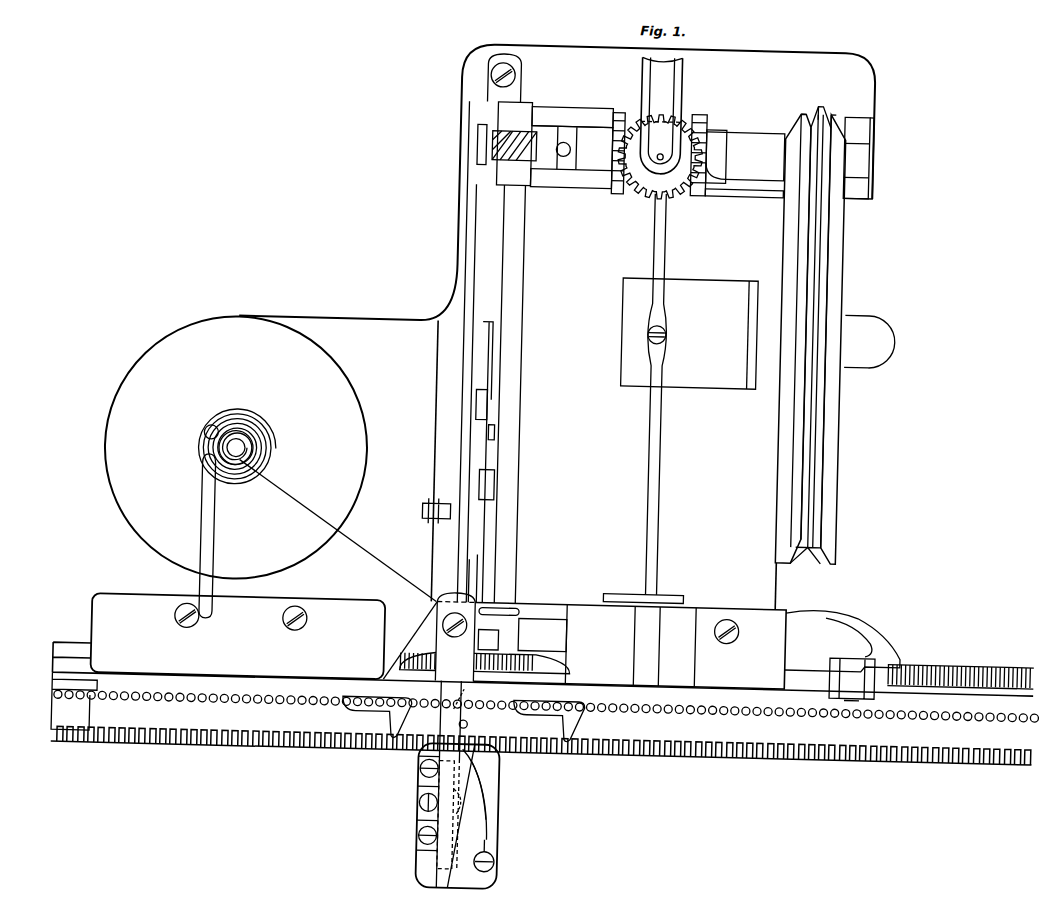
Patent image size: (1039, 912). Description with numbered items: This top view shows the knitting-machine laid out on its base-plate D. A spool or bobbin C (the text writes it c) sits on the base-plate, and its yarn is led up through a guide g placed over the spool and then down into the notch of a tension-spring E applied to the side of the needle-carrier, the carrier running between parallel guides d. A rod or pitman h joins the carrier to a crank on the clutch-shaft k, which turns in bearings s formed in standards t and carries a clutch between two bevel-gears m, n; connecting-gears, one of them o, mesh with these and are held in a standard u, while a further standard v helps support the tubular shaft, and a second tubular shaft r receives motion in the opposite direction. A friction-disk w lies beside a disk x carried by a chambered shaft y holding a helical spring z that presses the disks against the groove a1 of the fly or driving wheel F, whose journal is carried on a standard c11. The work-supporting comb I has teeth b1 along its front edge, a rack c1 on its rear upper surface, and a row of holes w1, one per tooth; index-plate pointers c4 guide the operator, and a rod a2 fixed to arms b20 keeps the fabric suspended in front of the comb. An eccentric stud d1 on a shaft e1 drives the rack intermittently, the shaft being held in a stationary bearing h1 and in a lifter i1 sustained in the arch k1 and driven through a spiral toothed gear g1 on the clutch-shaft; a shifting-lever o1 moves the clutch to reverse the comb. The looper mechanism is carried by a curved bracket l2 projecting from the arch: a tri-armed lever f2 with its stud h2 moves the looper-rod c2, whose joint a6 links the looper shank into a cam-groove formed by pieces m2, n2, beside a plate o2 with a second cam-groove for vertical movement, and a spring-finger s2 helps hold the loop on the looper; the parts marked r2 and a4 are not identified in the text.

The base-plate D is at (566, 326).
The spool or bobbin C is at (236, 447).
The joint a6 is at (245, 446).
The spool or bobbin c is at (236, 447).
The guide g is at (211, 436).
The arch k1 is at (507, 376).
The clutch-shaft k is at (483, 144).
The helical spring z is at (571, 148).
The tubular shaft r is at (575, 149).
The bevel-gear n is at (612, 153).
The bevel-gear m is at (706, 156).
The standard u is at (669, 373).
The connecting-gear o is at (663, 170).
The standard v is at (716, 156).
The tubular and chambered shaft y is at (745, 165).
The bearings s is at (856, 158).
The standards t is at (862, 158).
The fly or driving wheel F is at (810, 339).
The groove a1 is at (811, 331).
The rod a2 is at (821, 108).
The disk x is at (801, 109).
The friction-disk w is at (835, 110).
The rod or pitman h is at (465, 352).
The shaft e1 is at (509, 394).
The parallel guides d is at (484, 461).
The tri-armed lever f2 is at (460, 496).
The looper-rod c2 is at (478, 578).
The tension-spring E is at (452, 725).
The shifting-lever o1 is at (648, 398).
The standard c11 is at (690, 333).
The arms b20 is at (542, 697).
The shaft-lifter i1 is at (499, 621).
The pin or stud d1 is at (534, 635).
The rack c1 is at (717, 670).
The stationary bearing h1 is at (852, 679).
The row of holes w1 is at (546, 699).
The pointer c4 is at (463, 719).
The comb I is at (542, 735).
The teeth b1 is at (543, 758).
The pin r2 is at (470, 693).
The plate o2 is at (459, 718).
The curved bracket l2 is at (457, 816).
The spring-finger s2 is at (474, 784).
The arm a4 is at (482, 815).
The stud h2 is at (464, 802).
The piece of metal m2 is at (444, 828).
The piece of metal n2 is at (427, 793).
The spiral toothed gear g1 is at (429, 761).